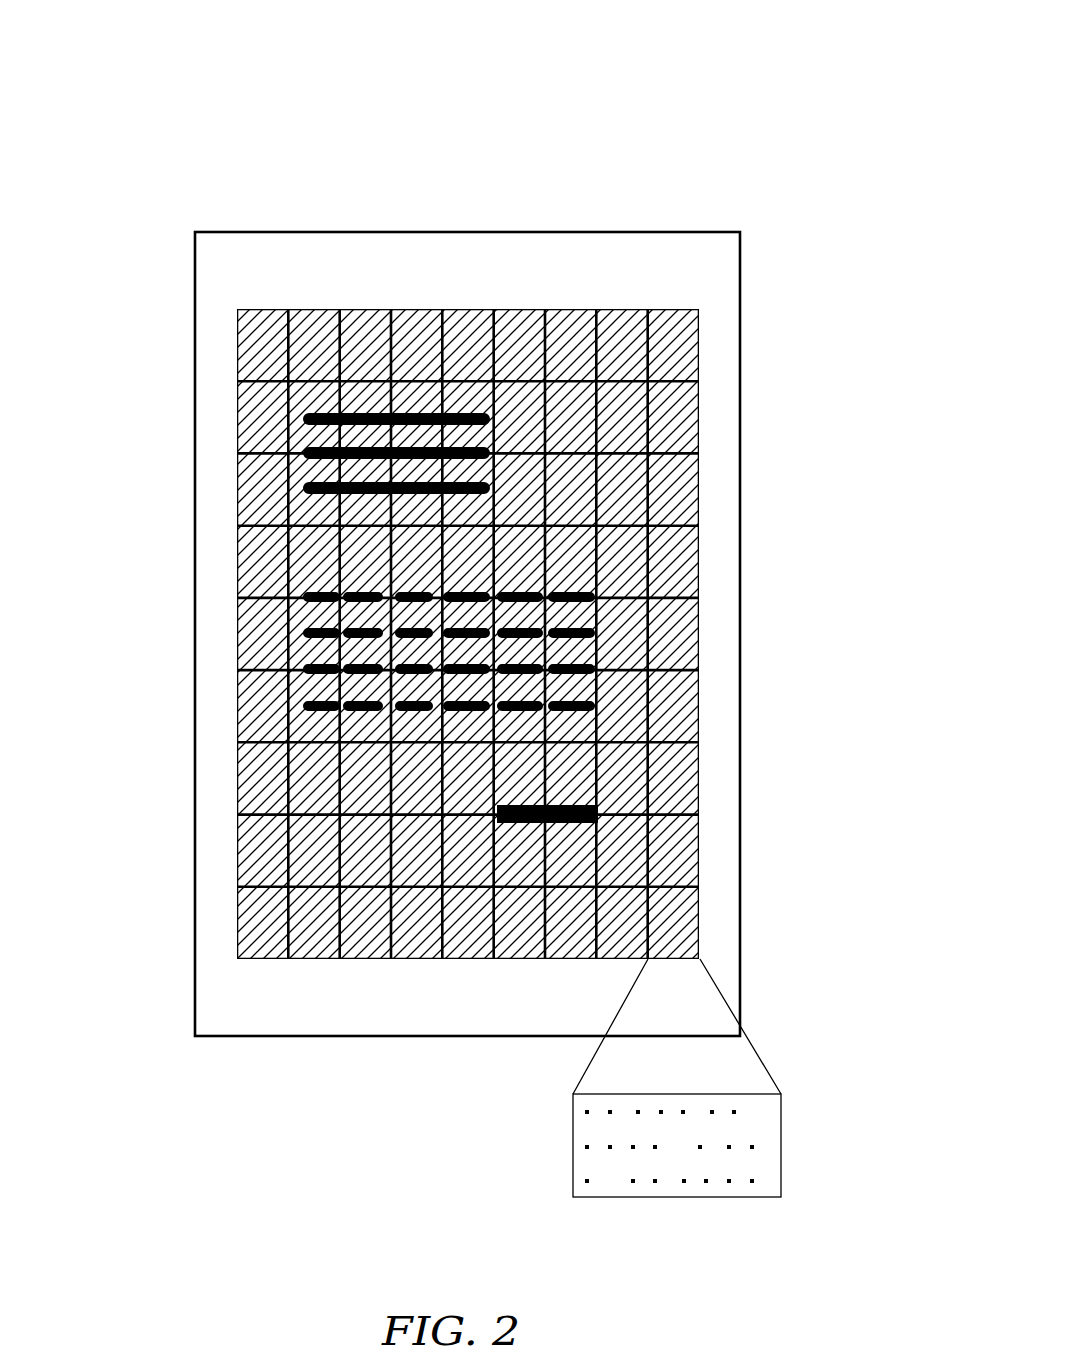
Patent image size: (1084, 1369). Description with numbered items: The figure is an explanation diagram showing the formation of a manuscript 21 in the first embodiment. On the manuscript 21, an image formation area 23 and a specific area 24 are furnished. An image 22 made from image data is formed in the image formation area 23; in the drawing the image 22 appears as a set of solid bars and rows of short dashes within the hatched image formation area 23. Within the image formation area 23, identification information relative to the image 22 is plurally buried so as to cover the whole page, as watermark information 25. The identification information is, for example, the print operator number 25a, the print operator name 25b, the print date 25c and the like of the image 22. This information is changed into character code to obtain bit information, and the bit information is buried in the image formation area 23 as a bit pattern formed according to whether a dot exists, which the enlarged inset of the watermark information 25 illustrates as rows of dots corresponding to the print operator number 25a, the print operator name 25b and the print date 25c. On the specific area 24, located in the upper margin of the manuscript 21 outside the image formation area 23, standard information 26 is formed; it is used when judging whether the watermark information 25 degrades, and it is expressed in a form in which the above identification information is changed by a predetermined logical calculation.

The manuscript 21 is at (715, 85).
The image 22 is at (486, 413).
The image formation area 23 is at (496, 754).
The specific area 24 is at (709, 247).
The watermark information 25 is at (252, 372).
The print operator number 25a is at (758, 1112).
The print operator name 25b is at (758, 1147).
The print date 25c is at (758, 1181).
The standard information 26 is at (646, 237).